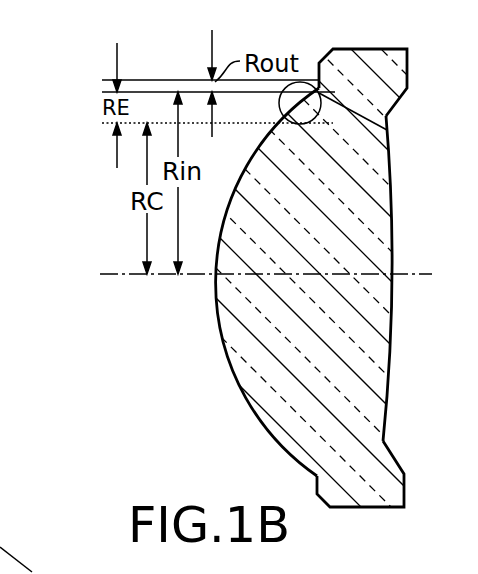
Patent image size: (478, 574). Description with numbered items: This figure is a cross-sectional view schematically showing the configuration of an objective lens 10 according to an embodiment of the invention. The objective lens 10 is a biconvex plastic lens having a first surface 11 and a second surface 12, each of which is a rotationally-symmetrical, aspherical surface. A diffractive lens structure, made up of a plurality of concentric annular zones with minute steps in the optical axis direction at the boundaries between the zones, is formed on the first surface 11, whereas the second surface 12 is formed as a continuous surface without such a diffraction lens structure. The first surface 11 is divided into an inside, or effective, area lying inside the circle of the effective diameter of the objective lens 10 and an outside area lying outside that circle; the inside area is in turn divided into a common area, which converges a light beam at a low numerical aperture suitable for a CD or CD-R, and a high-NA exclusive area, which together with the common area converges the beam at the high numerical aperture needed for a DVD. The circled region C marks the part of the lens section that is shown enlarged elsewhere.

The objective lens 10 is at (397, 221).
The first surface 11 is at (236, 374).
The second surface 12 is at (390, 361).
The edge region of lens surface C is at (388, 128).